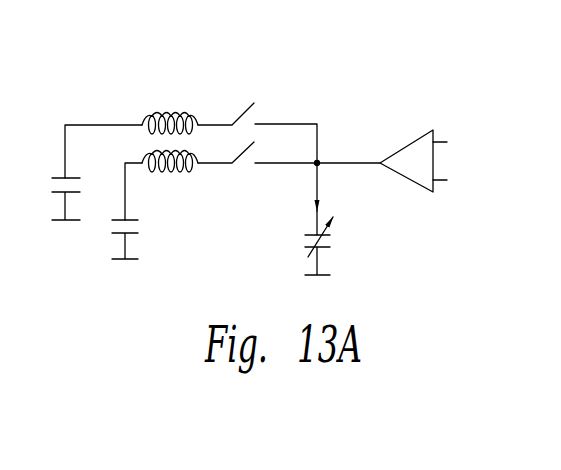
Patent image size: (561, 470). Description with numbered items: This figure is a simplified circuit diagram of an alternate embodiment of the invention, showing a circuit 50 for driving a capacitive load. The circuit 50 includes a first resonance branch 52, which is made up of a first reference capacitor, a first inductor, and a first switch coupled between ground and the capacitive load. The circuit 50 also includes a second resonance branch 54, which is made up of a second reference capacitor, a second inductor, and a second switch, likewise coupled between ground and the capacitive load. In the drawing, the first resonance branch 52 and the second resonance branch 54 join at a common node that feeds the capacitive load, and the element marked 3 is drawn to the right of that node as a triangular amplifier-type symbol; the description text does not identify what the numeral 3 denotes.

The circuit 50 is at (333, 69).
The first resonance branch 52 is at (115, 107).
The second resonance branch 54 is at (234, 214).
The amplifier / comparator 3 is at (415, 157).